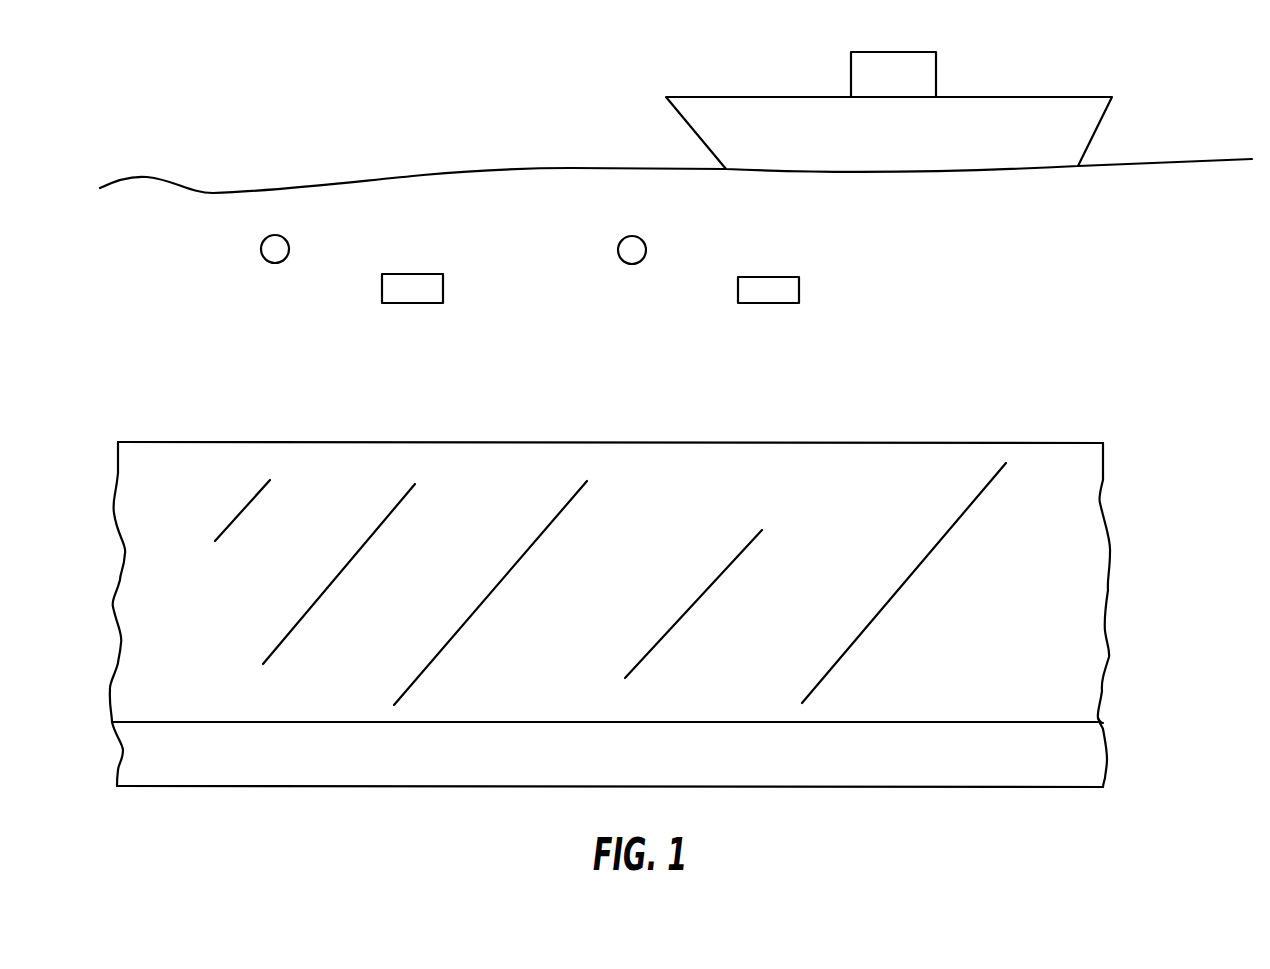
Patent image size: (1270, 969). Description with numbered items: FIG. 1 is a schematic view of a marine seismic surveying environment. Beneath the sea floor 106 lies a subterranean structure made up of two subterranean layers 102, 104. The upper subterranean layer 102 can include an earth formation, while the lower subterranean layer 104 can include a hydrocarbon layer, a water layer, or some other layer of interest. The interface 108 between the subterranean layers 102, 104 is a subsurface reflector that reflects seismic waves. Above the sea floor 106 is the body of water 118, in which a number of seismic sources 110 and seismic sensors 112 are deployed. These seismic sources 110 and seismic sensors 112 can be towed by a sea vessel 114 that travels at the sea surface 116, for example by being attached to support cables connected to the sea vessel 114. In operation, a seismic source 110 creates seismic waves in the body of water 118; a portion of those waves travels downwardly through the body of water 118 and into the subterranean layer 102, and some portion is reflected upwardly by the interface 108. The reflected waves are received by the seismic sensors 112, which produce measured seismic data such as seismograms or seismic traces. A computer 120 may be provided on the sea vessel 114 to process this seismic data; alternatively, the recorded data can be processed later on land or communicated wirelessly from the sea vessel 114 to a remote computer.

The subterranean layer 102 is at (647, 582).
The subterranean layer 104 is at (648, 744).
The sea floor 106 is at (610, 417).
The interface 108 is at (648, 684).
The seismic source 110 is at (490, 234).
The seismic sensor 112 is at (614, 273).
The sea vessel 114 is at (913, 113).
The sea surface 116 is at (676, 159).
The body of water 118 is at (1066, 277).
The computer 120 is at (930, 52).